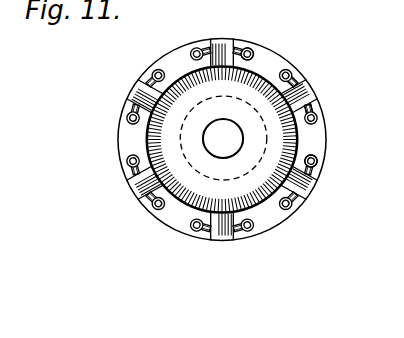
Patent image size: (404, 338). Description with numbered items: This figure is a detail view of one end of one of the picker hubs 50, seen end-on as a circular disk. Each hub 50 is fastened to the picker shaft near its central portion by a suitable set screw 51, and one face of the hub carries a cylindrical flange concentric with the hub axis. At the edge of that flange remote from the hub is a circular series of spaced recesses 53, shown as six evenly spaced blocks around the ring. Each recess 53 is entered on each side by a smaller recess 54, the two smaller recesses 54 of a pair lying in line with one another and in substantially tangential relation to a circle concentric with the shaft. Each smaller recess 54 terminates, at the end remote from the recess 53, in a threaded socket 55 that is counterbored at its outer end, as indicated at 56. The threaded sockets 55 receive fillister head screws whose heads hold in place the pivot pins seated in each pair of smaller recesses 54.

The hub 50 is at (229, 151).
The set screw 51 is at (132, 137).
The recess 53 is at (293, 100).
The smaller recess 54 is at (332, 148).
The threaded socket 55 is at (289, 73).
The counterbore 56 is at (258, 54).